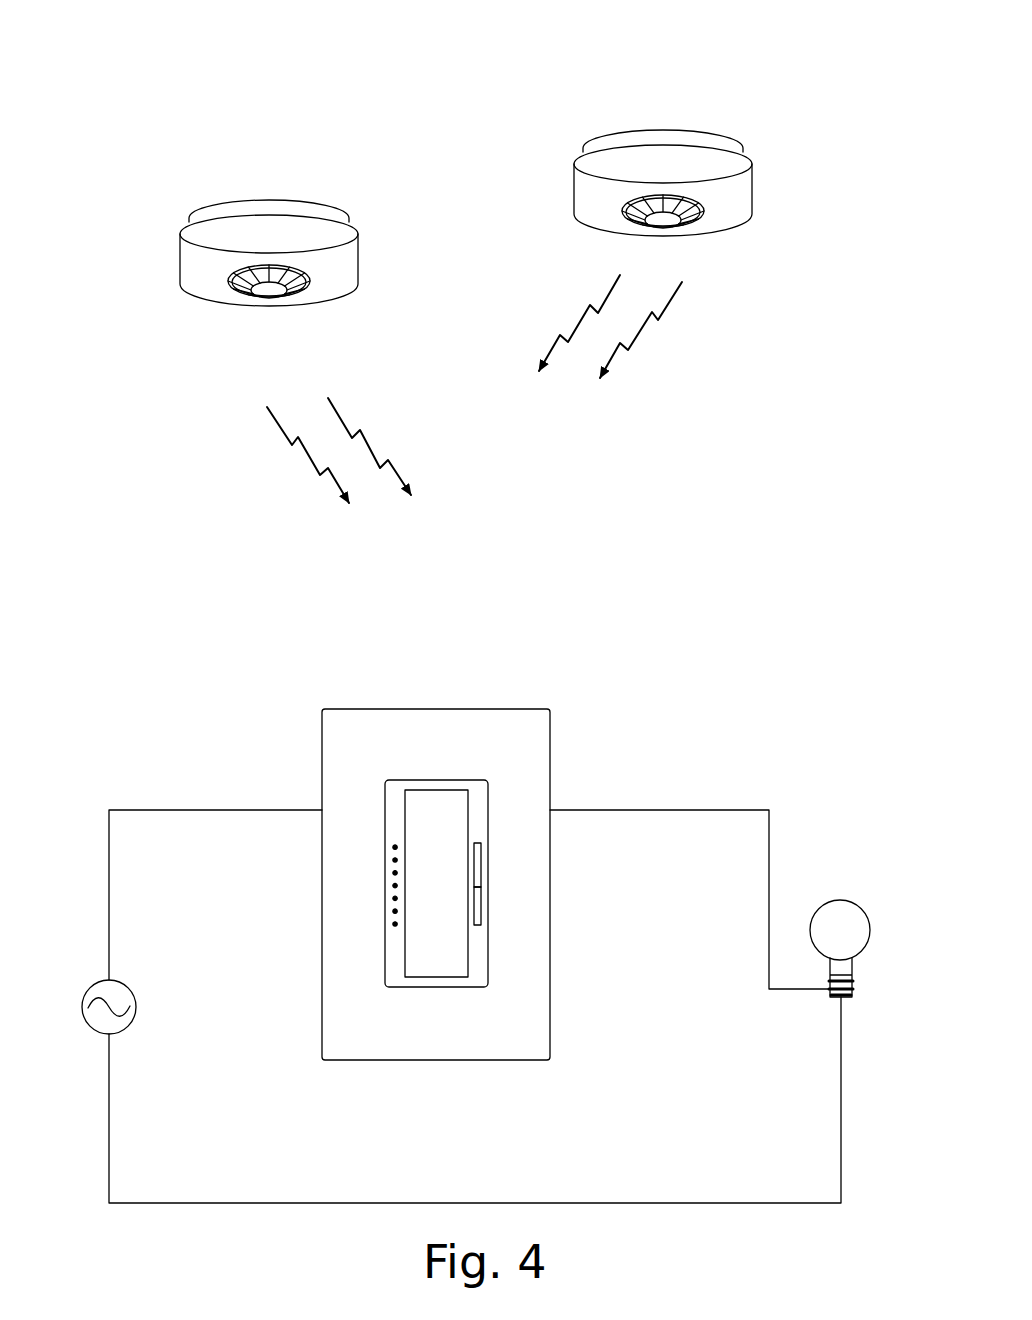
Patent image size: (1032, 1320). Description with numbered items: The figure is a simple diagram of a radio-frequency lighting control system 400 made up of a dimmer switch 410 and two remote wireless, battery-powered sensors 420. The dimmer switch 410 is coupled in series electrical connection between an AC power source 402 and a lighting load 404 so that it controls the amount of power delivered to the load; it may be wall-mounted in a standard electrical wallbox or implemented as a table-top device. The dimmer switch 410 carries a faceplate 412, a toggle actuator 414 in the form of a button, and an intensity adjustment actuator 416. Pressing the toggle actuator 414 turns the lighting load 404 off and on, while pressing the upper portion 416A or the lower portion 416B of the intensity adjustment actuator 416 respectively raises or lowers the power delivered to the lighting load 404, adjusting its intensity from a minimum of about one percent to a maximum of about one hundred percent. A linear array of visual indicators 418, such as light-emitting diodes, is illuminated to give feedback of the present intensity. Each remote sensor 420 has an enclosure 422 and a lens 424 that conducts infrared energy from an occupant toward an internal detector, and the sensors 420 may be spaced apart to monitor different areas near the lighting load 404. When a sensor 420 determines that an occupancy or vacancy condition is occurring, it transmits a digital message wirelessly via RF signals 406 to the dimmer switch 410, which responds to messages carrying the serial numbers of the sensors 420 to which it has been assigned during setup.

The radio-frequency lighting control system 400 is at (428, 155).
The AC power source 402 is at (90, 1027).
The lighting load 404 is at (840, 917).
The RF signals 406 is at (477, 489).
The dimmer switch 410 is at (445, 890).
The faceplate 412 is at (393, 738).
The toggle actuator 414 is at (447, 967).
The intensity adjustment actuator 416 is at (588, 905).
The upper portion 416A is at (478, 863).
The lower portion 416B is at (478, 903).
The visual indicators 418 is at (385, 885).
The remote sensors 420 is at (499, 219).
The enclosure 422 is at (269, 181).
The lens 424 is at (240, 320).